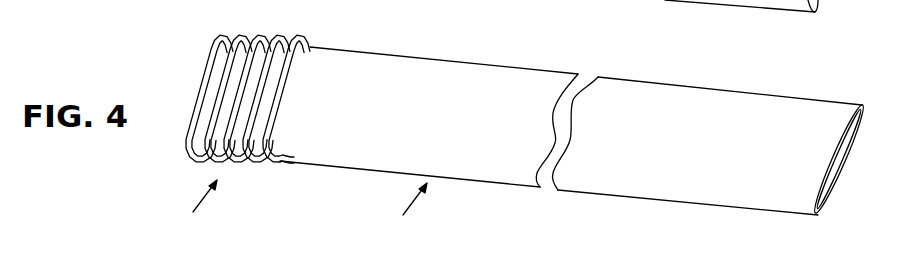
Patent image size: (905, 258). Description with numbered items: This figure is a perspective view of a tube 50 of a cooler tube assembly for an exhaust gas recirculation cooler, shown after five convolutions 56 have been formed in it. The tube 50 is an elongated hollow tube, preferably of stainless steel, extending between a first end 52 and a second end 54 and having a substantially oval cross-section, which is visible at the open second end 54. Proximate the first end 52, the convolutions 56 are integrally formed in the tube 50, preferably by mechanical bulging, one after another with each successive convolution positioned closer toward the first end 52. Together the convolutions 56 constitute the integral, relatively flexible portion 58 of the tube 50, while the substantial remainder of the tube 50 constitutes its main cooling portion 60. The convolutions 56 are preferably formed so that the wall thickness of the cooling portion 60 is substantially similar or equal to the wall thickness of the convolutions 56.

The tube 50 is at (700, 87).
The first end 52 is at (236, 83).
The second end 54 is at (843, 176).
The convolutions 56 is at (277, 38).
The flexible portion 58 is at (194, 201).
The main cooling portion 60 is at (405, 205).